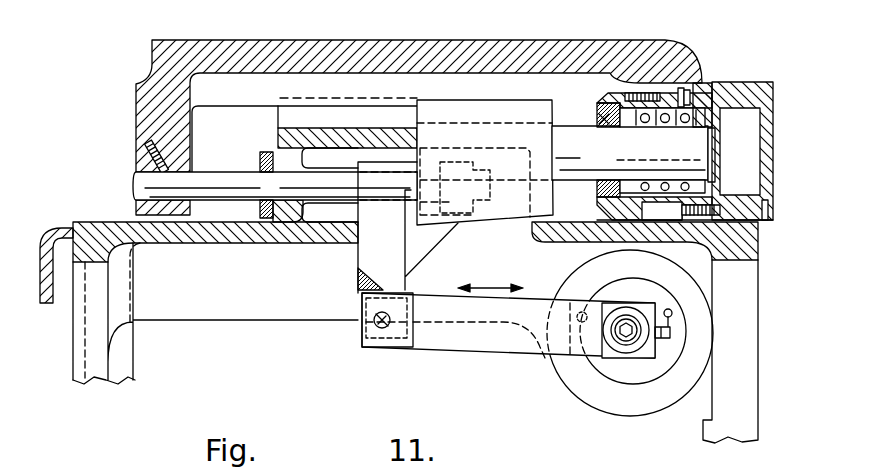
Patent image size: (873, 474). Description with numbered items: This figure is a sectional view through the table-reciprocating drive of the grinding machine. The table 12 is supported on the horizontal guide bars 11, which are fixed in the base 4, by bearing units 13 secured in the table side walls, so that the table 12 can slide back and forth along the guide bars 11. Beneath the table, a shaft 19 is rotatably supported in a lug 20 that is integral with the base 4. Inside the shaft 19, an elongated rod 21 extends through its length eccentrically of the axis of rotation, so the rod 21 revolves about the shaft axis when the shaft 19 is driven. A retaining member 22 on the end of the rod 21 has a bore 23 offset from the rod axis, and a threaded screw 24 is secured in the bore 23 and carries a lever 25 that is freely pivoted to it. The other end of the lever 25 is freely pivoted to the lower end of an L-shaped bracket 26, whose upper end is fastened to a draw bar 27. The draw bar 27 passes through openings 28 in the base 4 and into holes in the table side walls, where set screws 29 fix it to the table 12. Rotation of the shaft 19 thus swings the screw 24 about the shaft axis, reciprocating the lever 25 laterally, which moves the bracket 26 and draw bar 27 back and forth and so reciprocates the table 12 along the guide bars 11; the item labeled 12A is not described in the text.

The base 4 is at (232, 233).
The guide bars 11 is at (575, 161).
The table 12 is at (160, 45).
The cylinder portion of housing 12A is at (185, 128).
The bearing units 13 is at (718, 82).
The shaft 19 is at (660, 365).
The lug 20 is at (577, 258).
The rod 21 is at (627, 302).
The retaining member 22 is at (623, 307).
The bore 23 is at (465, 187).
The screw 24 is at (628, 338).
The lever 25 is at (447, 337).
The L-shaped bracket 26 is at (375, 243).
The draw bar 27 is at (322, 196).
The openings 28 is at (308, 162).
The set screws 29 is at (182, 175).